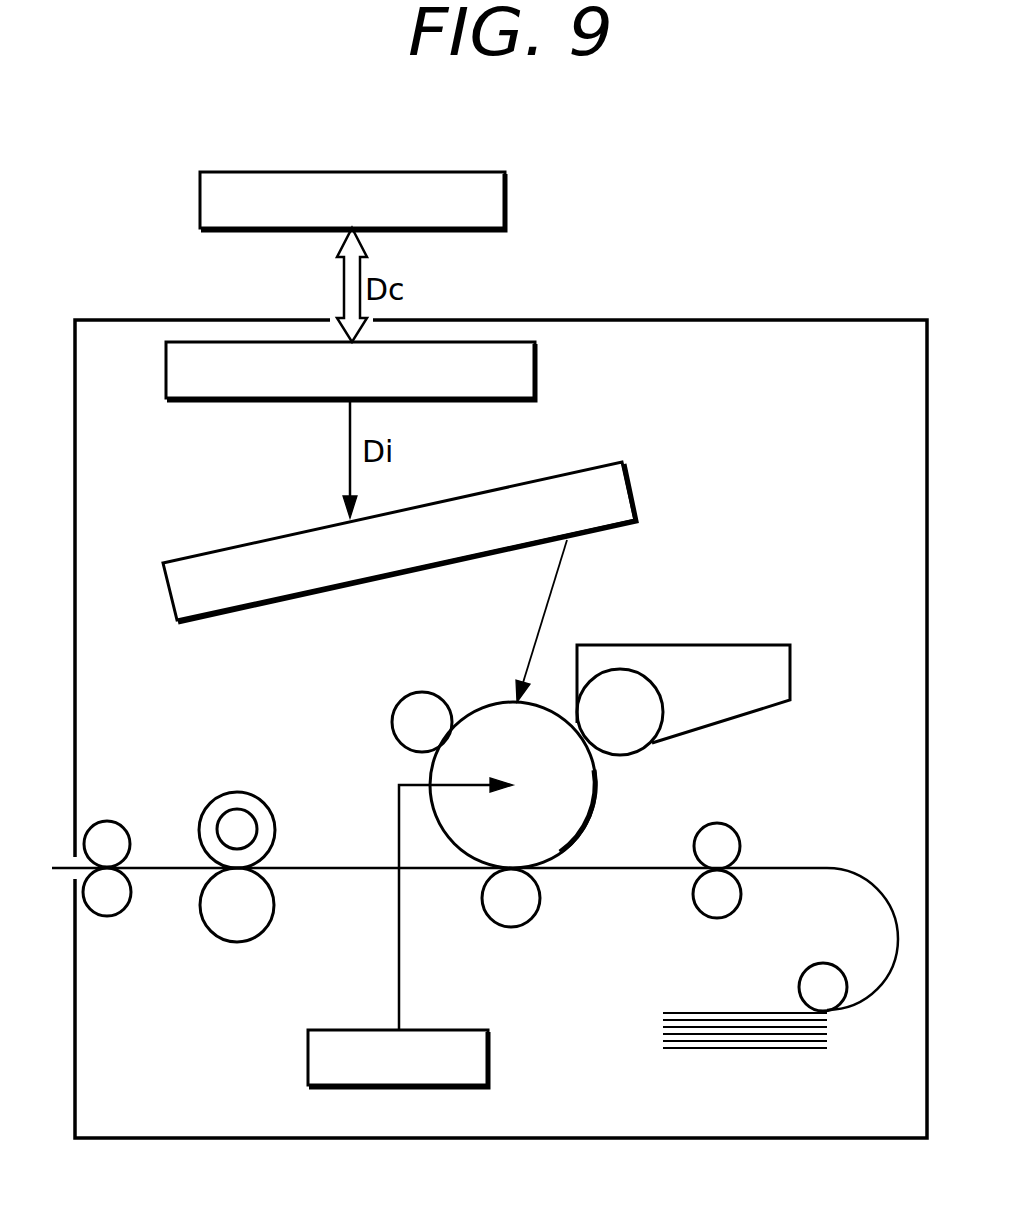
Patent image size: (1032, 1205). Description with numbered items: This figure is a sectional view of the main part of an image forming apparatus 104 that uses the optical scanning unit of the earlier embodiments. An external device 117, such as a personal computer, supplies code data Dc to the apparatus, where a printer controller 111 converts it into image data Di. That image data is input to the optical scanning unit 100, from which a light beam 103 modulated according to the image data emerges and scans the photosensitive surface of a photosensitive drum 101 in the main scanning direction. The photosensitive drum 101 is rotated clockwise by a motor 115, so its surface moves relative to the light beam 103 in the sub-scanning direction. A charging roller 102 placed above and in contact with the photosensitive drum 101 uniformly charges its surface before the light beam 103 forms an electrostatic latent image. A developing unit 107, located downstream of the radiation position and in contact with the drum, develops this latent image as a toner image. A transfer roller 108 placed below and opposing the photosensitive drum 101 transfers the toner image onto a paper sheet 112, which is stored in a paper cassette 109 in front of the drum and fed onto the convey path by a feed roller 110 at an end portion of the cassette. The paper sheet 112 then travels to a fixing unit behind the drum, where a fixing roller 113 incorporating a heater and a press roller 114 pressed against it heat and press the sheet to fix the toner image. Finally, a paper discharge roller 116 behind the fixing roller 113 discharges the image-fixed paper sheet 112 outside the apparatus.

The optical scanning unit 100 is at (225, 548).
The photosensitive drum 101 is at (583, 805).
The charging roller 102 is at (415, 700).
The light beam 103 is at (547, 603).
The image forming apparatus 104 is at (690, 321).
The developing unit 107 is at (715, 652).
The transfer roller 108 is at (530, 897).
The paper cassette 109 is at (740, 1050).
The feed roller 110 is at (825, 965).
The printer controller 111 is at (537, 375).
The paper sheet 112 is at (362, 866).
The fixing roller 113 is at (248, 800).
The press roller 114 is at (233, 932).
The motor 115 is at (440, 1030).
The paper discharge roller 116 is at (112, 828).
The external device 117 is at (487, 172).